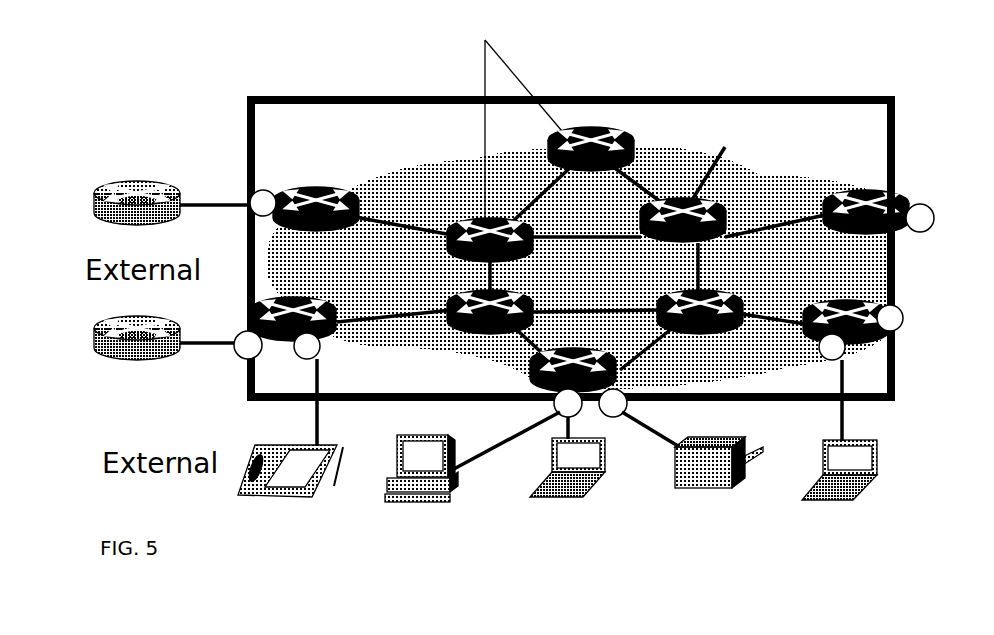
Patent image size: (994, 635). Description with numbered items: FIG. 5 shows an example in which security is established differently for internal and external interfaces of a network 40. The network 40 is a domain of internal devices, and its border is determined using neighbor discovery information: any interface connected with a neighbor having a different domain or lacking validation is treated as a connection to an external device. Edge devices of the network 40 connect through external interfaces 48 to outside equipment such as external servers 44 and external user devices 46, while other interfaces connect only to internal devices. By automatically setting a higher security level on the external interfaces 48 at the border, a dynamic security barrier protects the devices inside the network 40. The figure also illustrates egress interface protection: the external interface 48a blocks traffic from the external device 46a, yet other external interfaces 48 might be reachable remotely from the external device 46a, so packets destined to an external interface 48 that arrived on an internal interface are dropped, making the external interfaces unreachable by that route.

The network 40 is at (249, 98).
The external servers 44 is at (103, 270).
The external user devices 46 is at (557, 522).
The external device 46a is at (712, 487).
The external interfaces 48 is at (256, 212).
The external interface 48a is at (614, 410).